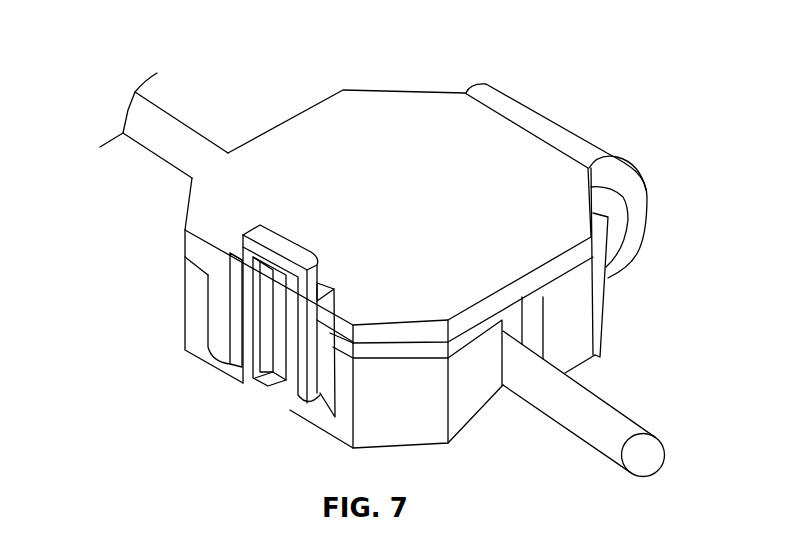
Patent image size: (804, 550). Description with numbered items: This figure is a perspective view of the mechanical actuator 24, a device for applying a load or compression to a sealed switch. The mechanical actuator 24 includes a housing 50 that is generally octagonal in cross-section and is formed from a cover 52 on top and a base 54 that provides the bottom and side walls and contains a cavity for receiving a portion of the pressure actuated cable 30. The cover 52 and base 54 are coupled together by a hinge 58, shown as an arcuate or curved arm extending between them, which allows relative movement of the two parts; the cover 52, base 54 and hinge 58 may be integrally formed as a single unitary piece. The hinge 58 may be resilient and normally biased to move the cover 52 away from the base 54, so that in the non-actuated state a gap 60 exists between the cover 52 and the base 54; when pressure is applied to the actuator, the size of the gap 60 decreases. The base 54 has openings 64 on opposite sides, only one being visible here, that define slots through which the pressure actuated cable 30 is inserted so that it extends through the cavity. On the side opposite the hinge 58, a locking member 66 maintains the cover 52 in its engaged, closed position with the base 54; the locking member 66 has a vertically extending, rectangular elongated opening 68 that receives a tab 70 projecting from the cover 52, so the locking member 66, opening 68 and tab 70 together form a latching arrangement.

The mechanical actuator 24 is at (96, 246).
The pressure actuated cable 30 is at (655, 414).
The housing 50 is at (404, 74).
The cover 52 is at (493, 160).
The base 54 is at (468, 417).
The hinge 58 is at (648, 186).
The gap 60 is at (397, 352).
The opening 64 is at (517, 333).
The locking member 66 is at (280, 240).
The elongated opening 68 is at (250, 402).
The tab 70 is at (235, 252).